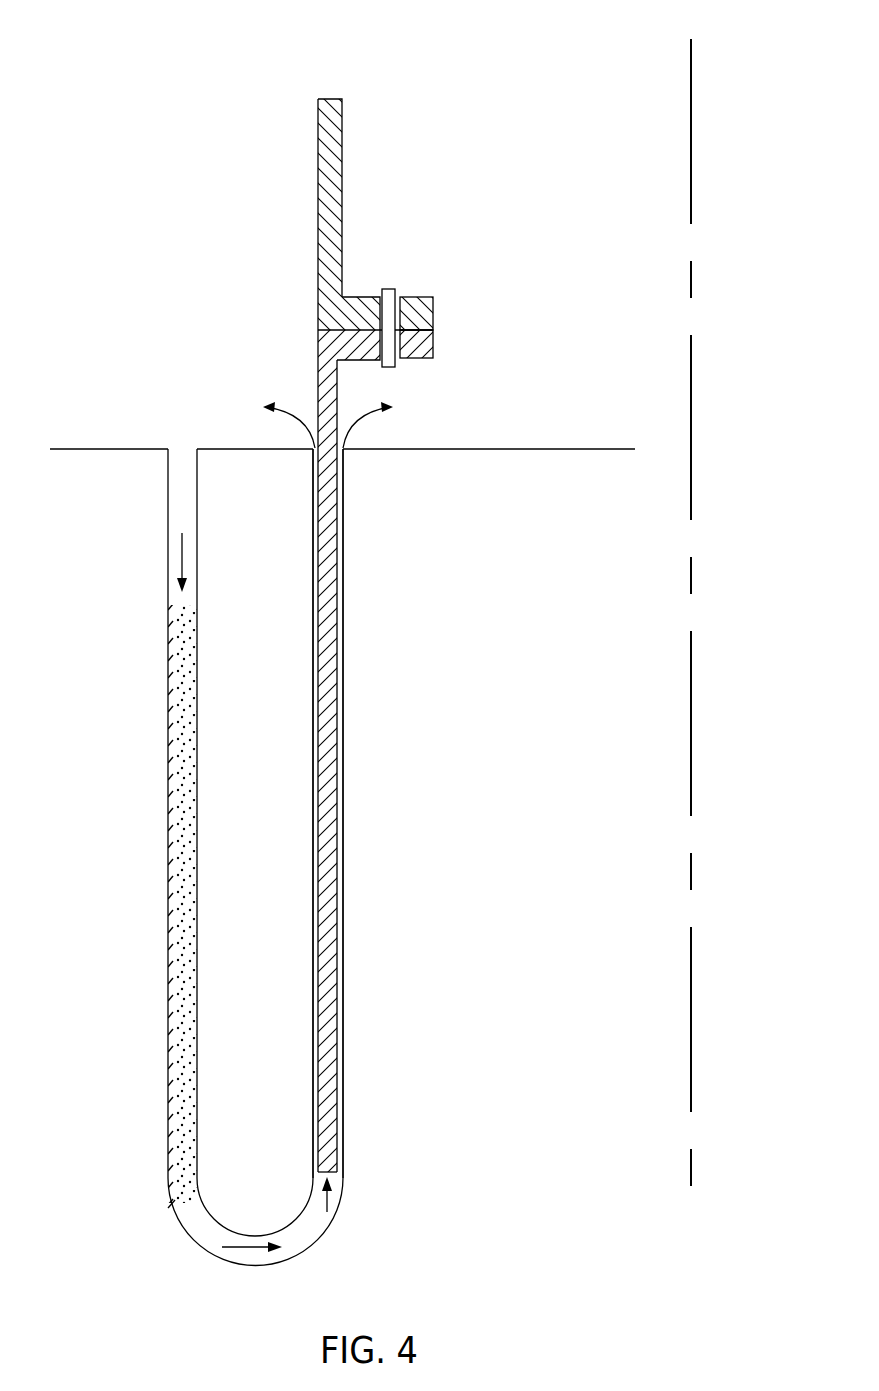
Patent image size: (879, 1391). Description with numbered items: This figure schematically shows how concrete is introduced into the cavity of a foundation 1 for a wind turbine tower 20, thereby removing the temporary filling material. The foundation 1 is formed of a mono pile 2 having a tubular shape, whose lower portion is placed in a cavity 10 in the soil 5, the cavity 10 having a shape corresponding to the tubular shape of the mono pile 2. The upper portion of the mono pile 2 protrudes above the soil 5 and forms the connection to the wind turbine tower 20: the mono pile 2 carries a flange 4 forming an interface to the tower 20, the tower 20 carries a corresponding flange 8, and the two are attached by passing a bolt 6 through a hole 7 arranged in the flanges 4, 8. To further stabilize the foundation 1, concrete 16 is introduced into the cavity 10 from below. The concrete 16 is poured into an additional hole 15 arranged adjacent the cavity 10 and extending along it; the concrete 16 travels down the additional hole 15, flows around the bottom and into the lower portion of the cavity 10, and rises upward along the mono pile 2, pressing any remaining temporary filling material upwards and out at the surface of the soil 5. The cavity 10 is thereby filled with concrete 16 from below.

The foundation 1 is at (190, 310).
The mono pile 2 is at (328, 633).
The flange 4 is at (433, 340).
The soil 5 is at (482, 562).
The bolt 6 is at (393, 289).
The hole 7 is at (410, 300).
The flange 8 is at (353, 297).
The cavity 10 is at (339, 813).
The additional hole 15 is at (177, 675).
The concrete 16 is at (177, 928).
The wind turbine tower 20 is at (342, 138).